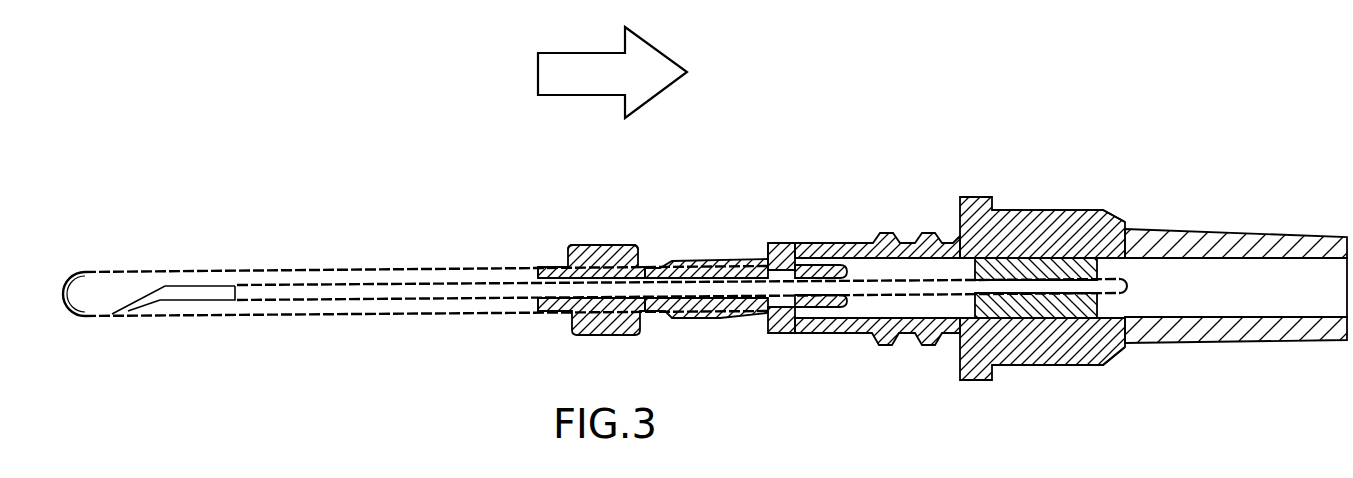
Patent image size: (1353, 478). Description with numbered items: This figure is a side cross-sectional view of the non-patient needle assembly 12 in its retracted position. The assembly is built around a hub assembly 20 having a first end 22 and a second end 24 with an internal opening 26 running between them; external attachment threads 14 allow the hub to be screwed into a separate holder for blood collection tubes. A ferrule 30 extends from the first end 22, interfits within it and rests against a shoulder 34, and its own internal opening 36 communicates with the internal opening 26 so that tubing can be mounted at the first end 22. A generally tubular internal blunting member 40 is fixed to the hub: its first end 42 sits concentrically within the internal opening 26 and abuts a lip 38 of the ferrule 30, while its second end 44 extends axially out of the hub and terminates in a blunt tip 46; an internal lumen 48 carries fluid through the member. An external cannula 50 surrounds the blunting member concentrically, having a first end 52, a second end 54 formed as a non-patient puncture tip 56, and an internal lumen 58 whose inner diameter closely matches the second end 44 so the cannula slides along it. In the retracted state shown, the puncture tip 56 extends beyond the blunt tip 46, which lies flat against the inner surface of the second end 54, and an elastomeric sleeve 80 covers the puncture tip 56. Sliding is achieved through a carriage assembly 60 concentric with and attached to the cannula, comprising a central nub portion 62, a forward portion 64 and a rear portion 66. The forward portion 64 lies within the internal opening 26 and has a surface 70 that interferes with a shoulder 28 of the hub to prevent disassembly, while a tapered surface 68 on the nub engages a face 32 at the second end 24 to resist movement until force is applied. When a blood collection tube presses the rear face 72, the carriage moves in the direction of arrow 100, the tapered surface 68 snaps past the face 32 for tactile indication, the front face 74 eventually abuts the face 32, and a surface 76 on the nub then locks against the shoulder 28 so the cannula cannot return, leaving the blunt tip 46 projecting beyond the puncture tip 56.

The arrow 100 is at (583, 57).
The non-patient needle assembly 12 is at (422, 195).
The attachment threads 14 is at (935, 337).
The hub assembly 20 is at (960, 200).
The first end 22 is at (1103, 206).
The second end 24 is at (767, 240).
The internal opening 26 is at (878, 262).
The shoulder 28 is at (815, 243).
The ferrule 30 is at (1200, 229).
The face 32 is at (767, 245).
The shoulder 34 is at (1072, 235).
The internal opening 36 is at (1122, 289).
The lip 38 is at (1073, 300).
The internal blunting member 40 is at (885, 297).
The first end 42 is at (1047, 300).
The second end 44 is at (260, 302).
The blunt tip 46 is at (220, 310).
The internal lumen 48 is at (232, 286).
The external cannula 50 is at (287, 274).
The first end 52 is at (513, 268).
The second end 54 is at (165, 301).
The non-patient puncture tip 56 is at (111, 316).
The internal lumen 58 is at (158, 284).
The carriage assembly 60 is at (622, 337).
The central nub portion 62 is at (721, 318).
The forward portion 64 is at (845, 300).
The rear portion 66 is at (569, 337).
The tapered surface 68 is at (770, 333).
The surface 70 is at (792, 322).
The rear face 72 is at (570, 325).
The front face 74 is at (641, 256).
The surface 76 is at (666, 316).
The elastomeric sleeve 80 is at (92, 272).